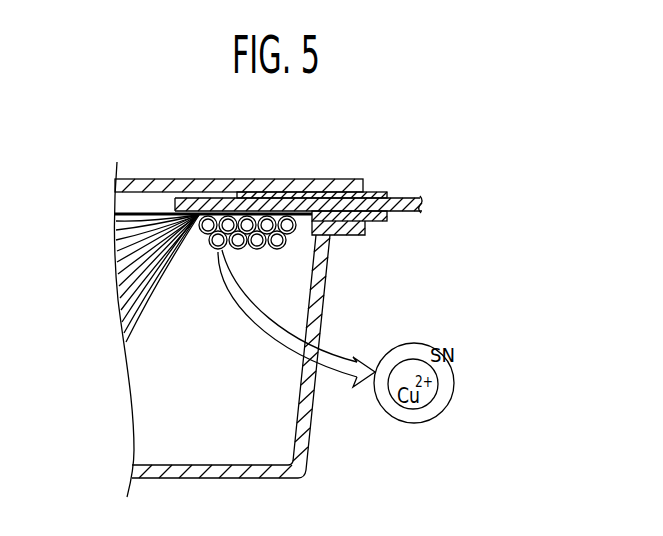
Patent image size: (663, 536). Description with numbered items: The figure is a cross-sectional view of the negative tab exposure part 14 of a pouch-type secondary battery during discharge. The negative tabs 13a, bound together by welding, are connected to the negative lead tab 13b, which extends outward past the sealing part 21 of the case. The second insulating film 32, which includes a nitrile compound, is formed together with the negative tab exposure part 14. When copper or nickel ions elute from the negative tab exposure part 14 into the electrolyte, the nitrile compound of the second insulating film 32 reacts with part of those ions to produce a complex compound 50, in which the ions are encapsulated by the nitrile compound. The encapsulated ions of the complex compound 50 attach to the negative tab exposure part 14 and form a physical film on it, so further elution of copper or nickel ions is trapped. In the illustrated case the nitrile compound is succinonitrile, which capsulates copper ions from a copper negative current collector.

The negative tab 13a is at (145, 305).
The negative lead tab 13b is at (395, 202).
The negative tab exposure part 14 is at (222, 212).
The sealing part 21 is at (347, 237).
The second insulating film 32 is at (352, 210).
The complex compound 50 is at (257, 248).